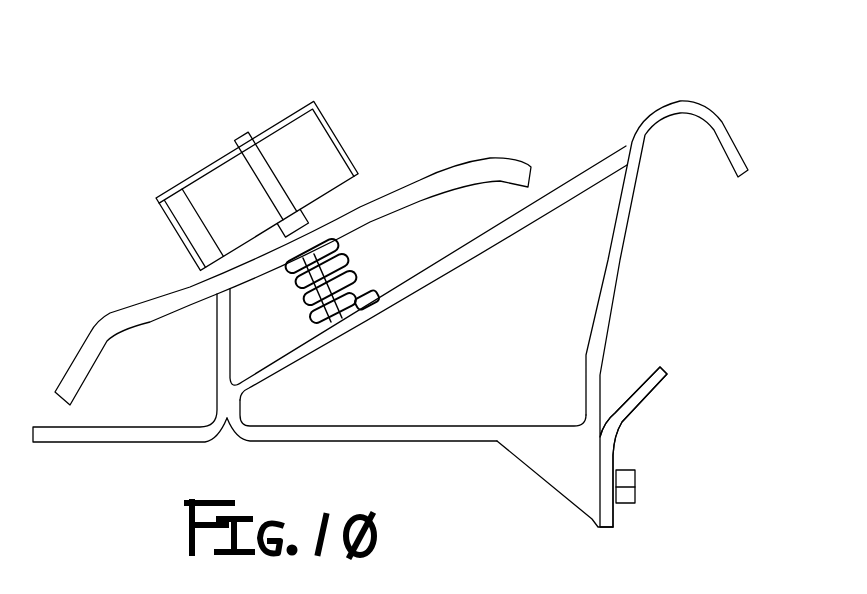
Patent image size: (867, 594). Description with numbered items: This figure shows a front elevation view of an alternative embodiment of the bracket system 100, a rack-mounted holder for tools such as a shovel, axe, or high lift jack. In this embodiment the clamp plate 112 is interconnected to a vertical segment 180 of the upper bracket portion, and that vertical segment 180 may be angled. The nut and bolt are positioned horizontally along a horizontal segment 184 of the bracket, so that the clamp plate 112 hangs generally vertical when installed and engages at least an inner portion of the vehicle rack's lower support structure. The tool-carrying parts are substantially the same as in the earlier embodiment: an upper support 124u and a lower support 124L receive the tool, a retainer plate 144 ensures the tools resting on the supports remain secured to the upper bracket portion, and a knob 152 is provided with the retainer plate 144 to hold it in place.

The bracket system 100 is at (362, 12).
The knob 152 is at (279, 149).
The retainer plate 144 is at (417, 197).
The upper support 124u is at (457, 250).
The lower support 124L is at (122, 415).
The horizontal segment 184 is at (390, 430).
The vertical segment 180 is at (593, 387).
The clamp plate 112 is at (740, 540).